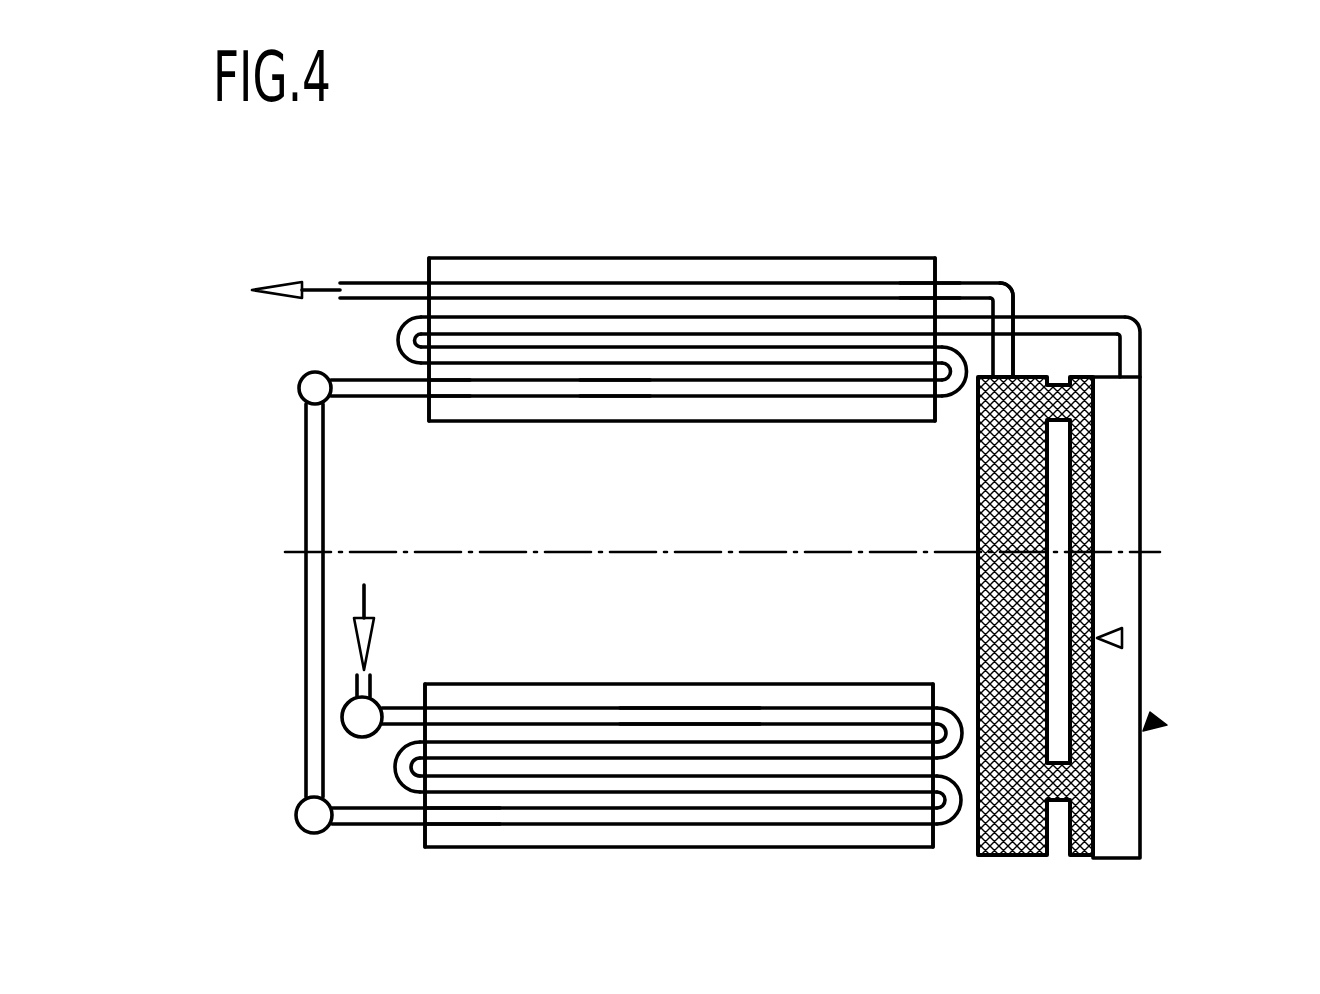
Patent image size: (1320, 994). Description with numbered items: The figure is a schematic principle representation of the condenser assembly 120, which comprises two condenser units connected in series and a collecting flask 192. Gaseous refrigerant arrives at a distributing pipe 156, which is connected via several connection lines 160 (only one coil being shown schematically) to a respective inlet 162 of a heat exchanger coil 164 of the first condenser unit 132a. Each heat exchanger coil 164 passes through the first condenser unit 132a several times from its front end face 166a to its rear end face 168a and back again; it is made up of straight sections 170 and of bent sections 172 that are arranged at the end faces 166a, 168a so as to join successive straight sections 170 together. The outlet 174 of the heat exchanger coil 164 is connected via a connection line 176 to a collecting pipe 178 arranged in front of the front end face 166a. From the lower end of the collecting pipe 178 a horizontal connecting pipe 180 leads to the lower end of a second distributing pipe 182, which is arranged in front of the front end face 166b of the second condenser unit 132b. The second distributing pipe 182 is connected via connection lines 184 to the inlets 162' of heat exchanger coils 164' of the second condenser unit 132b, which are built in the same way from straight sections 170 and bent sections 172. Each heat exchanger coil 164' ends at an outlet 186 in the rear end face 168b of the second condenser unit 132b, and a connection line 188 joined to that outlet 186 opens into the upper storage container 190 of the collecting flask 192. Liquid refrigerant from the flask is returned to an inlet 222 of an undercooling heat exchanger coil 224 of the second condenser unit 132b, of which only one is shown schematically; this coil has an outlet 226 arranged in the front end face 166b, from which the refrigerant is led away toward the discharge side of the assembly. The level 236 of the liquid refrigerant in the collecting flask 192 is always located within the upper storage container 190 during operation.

The condenser assembly 120 is at (1020, 293).
The first condenser unit 132a is at (813, 850).
The second condenser unit 132b is at (813, 272).
The distributing pipe 156 is at (368, 712).
The connection line 160 is at (428, 716).
The inlet 162 is at (659, 654).
The inlet 162' is at (452, 439).
The heat exchanger coil 164 is at (690, 654).
The heat exchanger coil 164' is at (621, 439).
The front end face 166a is at (418, 850).
The front end face 166b is at (423, 273).
The rear end face 168a is at (933, 850).
The rear end face 168b is at (940, 403).
The straight section 170 is at (562, 323).
The bent section 172 is at (404, 341).
The outlet 174 is at (430, 826).
The connection line 176 is at (338, 826).
The collecting pipe 178 is at (300, 814).
The horizontal connecting pipe 180 is at (305, 456).
The second distributing pipe 182 is at (303, 386).
The connection line 184 is at (371, 398).
The outlet 186 is at (1008, 288).
The connection line 188 is at (1103, 328).
The upper storage container 190 is at (1122, 493).
The collecting flask 192 is at (1158, 719).
The inlet 222 is at (934, 293).
The undercooling heat exchanger coil 224 is at (710, 294).
The outlet 226 is at (407, 283).
The level 236 is at (1122, 638).